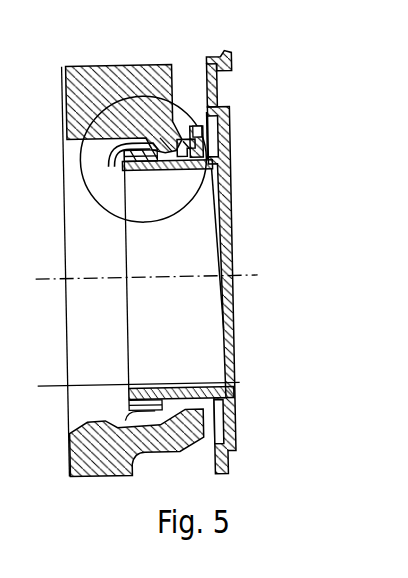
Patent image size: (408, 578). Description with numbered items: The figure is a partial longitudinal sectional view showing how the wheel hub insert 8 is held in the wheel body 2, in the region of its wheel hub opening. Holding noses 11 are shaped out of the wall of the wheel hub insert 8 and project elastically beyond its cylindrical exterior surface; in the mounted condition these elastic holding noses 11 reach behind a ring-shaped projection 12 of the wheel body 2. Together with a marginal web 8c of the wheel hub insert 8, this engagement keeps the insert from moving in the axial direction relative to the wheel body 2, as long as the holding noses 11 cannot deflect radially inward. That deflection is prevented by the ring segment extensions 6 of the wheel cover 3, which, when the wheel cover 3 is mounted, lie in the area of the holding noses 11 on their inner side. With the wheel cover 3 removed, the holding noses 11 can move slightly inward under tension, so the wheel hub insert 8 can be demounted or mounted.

The wheel body 2 is at (97, 80).
The wheel cover 3 is at (228, 259).
The ring segment extensions 6 is at (175, 170).
The wheel hub insert 8 is at (196, 143).
The marginal web 8c is at (230, 138).
The holding noses 11 is at (148, 145).
The ring-shaped projection 12 is at (176, 147).